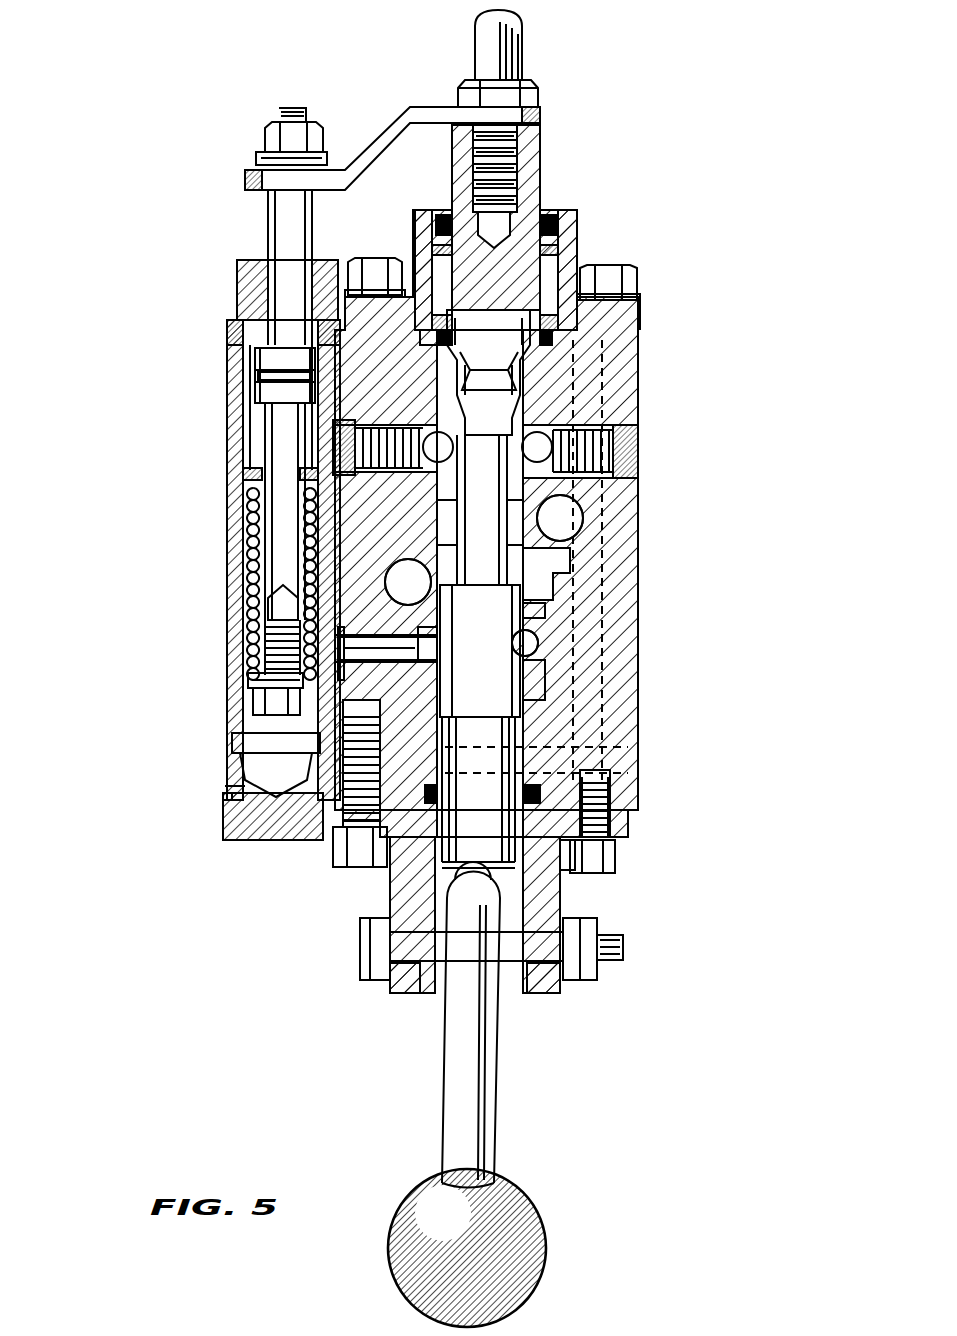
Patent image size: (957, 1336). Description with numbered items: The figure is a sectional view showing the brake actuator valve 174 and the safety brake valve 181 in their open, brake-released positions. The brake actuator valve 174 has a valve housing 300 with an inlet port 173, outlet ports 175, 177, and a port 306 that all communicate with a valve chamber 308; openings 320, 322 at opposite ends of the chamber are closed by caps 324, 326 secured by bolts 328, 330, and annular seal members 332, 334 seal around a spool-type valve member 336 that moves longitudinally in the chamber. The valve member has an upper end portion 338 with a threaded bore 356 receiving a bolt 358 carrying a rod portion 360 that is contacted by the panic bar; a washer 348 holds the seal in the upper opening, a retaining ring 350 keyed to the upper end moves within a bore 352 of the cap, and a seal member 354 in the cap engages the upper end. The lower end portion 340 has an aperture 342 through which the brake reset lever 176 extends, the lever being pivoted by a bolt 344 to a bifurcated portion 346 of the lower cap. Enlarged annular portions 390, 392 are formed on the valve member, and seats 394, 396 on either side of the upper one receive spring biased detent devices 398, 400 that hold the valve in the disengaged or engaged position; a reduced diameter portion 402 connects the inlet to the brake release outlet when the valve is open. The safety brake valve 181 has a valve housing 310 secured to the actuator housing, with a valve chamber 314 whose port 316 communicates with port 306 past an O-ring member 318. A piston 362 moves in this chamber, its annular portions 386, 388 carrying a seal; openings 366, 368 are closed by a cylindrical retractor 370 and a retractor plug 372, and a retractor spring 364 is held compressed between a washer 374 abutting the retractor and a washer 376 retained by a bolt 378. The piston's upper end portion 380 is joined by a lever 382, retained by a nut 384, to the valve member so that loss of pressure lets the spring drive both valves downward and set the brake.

The valve housing 300 is at (640, 366).
The rod portion 360 is at (524, 17).
The bolt 358 is at (532, 84).
The lever 382 is at (393, 118).
The nut 384 is at (272, 125).
The upper end portion 380 is at (268, 212).
The cylindrical retractor 370 is at (240, 300).
The opening 366 is at (230, 330).
The enlarged annular portion 386 is at (255, 360).
The enlarged annular portion 388 is at (256, 384).
The washer 374 is at (226, 472).
The retractor spring 364 is at (246, 556).
The piston 362 is at (286, 511).
The valve housing 310 is at (265, 640).
The washer 376 is at (250, 680).
The valve chamber 314 is at (253, 702).
The bolt 378 is at (236, 745).
The opening 368 is at (226, 792).
The retractor plug 372 is at (262, 840).
The bolts 328 is at (372, 258).
The bore 352 is at (422, 270).
The seal member 354 is at (432, 220).
The retaining ring 350 is at (558, 250).
The upper end portion 338 is at (545, 160).
The threaded bore 356 is at (530, 145).
The cap 324 is at (640, 302).
The washer 348 is at (560, 322).
The opening 320 is at (553, 338).
The annular seal member 332 is at (437, 338).
The enlarged annular portion 390 is at (456, 404).
The seat 396 is at (489, 384).
The spring biased detent device 398 is at (383, 430).
The spring biased detent device 400 is at (626, 452).
The seat 394 is at (448, 452).
The spool-type valve member 336 is at (497, 503).
The enlarged annular portion 392 is at (560, 552).
The outlet port 177 is at (578, 500).
The outlet port 175 is at (404, 560).
The O-ring member 318 is at (343, 628).
The port 306 is at (428, 630).
The port 316 is at (378, 660).
The reduced diameter portion 402 is at (545, 604).
The inlet port 173 is at (540, 640).
The valve chamber 308 is at (545, 668).
The opening 322 is at (600, 770).
The annular seal member 334 is at (428, 790).
The cap 326 is at (630, 826).
The bolts 330 is at (338, 850).
The aperture 342 is at (455, 876).
The lower end portion 340 is at (540, 880).
The bolt 344 is at (360, 934).
The bifurcated portion 346 is at (400, 992).
The brake reset lever 176 is at (500, 1032).
The safety brake valve 181 is at (124, 424).
The brake actuator valve 174 is at (706, 421).